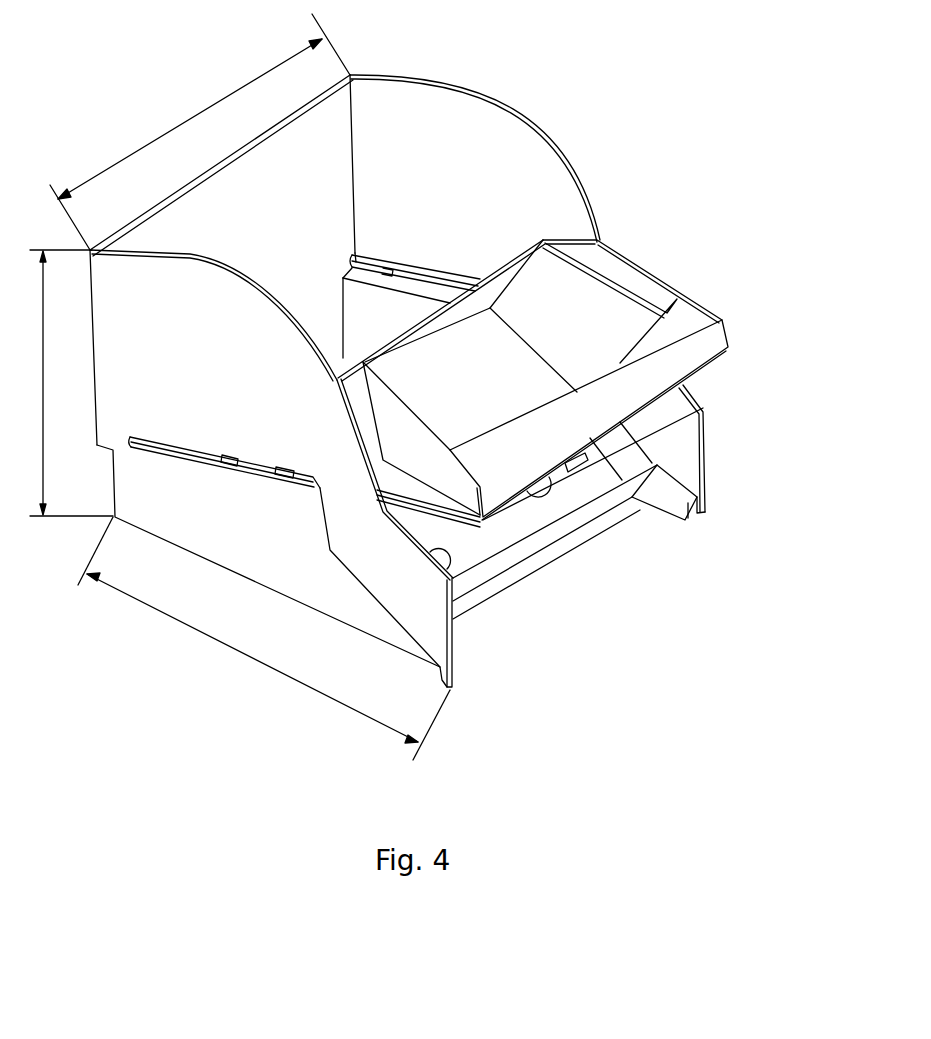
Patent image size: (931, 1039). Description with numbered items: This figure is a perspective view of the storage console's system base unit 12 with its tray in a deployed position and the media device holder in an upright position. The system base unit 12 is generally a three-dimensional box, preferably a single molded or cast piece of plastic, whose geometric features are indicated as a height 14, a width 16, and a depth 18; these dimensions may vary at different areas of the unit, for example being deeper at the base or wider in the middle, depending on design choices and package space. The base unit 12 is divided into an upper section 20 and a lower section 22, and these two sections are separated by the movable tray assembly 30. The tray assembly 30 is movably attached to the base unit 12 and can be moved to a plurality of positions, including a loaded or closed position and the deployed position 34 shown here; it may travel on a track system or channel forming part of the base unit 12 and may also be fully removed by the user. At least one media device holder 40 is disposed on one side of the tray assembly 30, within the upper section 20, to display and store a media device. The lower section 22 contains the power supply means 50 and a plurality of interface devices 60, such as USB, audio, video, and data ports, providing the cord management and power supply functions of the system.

The system base unit 12 is at (506, 98).
The height 14 is at (71, 383).
The width 16 is at (200, 132).
The depth 18 is at (264, 638).
The upper section 20 is at (407, 215).
The lower section 22 is at (411, 306).
The movable tray assembly 30 is at (727, 332).
The deployed position 34 is at (727, 332).
The media device holder 40 is at (645, 287).
The power supply means 50 is at (544, 496).
The interface devices 60 is at (578, 470).